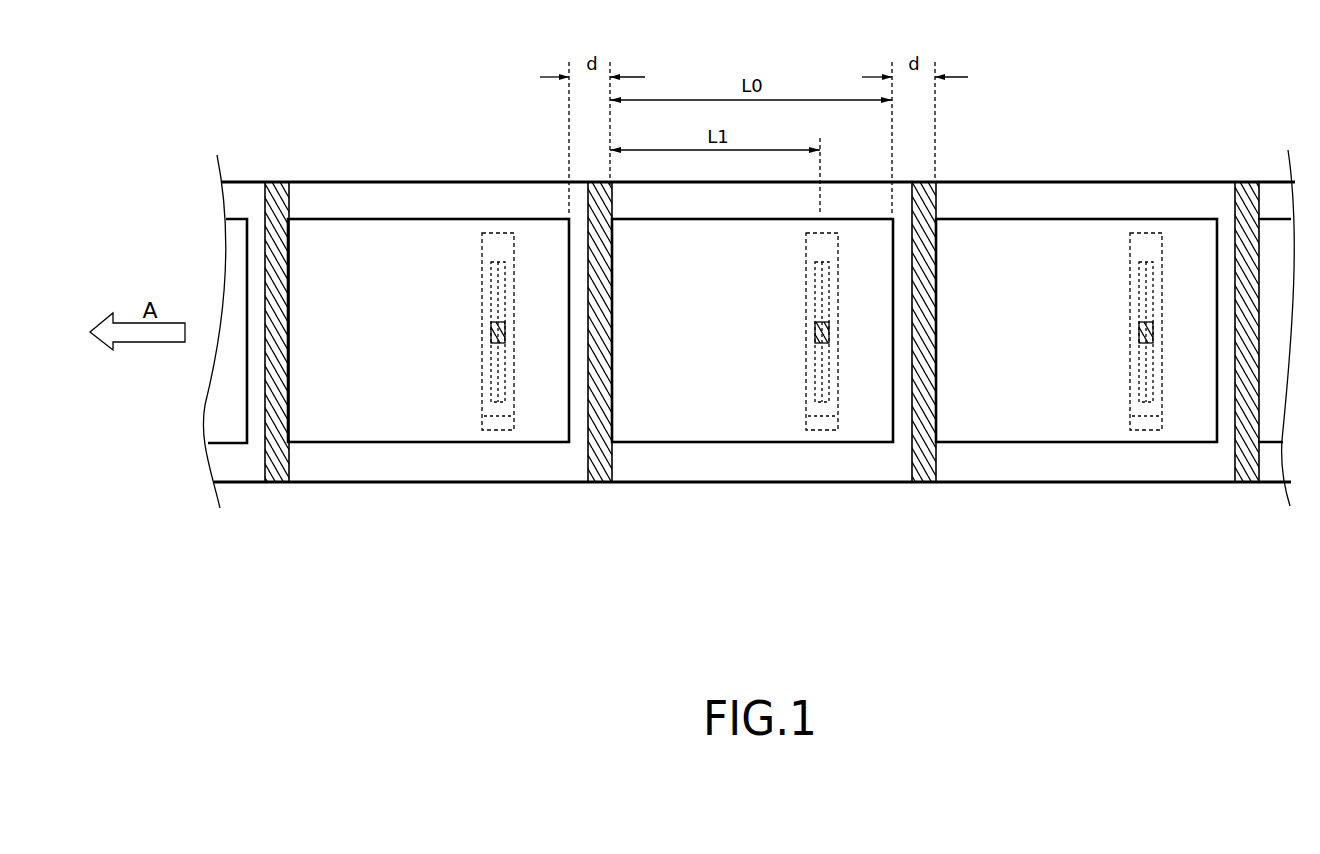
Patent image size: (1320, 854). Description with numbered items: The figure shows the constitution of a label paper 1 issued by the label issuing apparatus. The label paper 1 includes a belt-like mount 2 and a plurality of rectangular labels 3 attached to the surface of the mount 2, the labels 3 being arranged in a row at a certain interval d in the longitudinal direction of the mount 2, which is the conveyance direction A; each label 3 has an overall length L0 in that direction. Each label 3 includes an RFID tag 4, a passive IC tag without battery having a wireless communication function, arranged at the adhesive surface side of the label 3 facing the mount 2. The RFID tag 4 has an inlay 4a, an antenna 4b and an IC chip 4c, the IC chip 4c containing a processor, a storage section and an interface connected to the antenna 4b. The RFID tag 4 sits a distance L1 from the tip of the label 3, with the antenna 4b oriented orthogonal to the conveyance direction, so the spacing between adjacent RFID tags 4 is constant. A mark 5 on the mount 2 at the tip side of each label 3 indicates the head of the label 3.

The label paper 1 is at (321, 136).
The mount 2 is at (1062, 198).
The label 3 is at (404, 444).
The RFID tag 4 is at (498, 444).
The inlay 4a is at (490, 420).
The antenna 4b is at (491, 284).
The IC chip 4c is at (507, 330).
The mark 5 is at (283, 479).